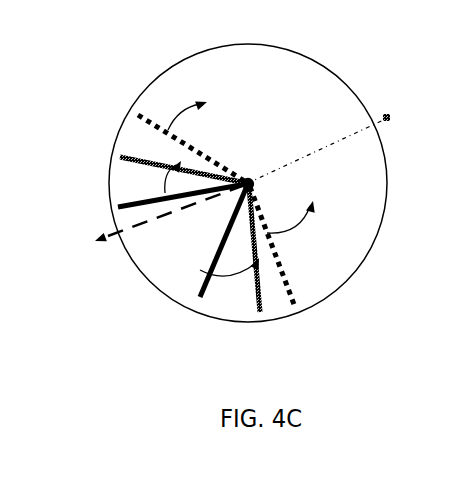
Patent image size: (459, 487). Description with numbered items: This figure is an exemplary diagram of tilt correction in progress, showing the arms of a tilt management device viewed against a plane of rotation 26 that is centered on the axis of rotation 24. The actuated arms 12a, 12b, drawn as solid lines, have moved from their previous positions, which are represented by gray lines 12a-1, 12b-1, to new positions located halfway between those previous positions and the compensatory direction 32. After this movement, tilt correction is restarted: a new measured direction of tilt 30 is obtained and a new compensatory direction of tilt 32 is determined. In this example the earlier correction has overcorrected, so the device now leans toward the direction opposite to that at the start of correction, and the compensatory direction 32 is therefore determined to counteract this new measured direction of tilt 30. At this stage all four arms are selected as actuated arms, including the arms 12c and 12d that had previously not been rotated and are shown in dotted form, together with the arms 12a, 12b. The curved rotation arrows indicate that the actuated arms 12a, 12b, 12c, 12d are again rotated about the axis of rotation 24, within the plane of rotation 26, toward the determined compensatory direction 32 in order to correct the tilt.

The plane of rotation 26 is at (340, 88).
The axis of rotation 24 is at (250, 180).
The compensatory direction of tilt 32 is at (392, 118).
The arm 12c is at (134, 116).
The previous position of arm 12a 12a-1 is at (120, 157).
The actuated arm 12a is at (110, 205).
The measured direction of tilt 30 is at (105, 247).
The actuated arm 12b is at (198, 300).
The previous position of arm 12b 12b-1 is at (260, 316).
The arm 12d is at (290, 287).